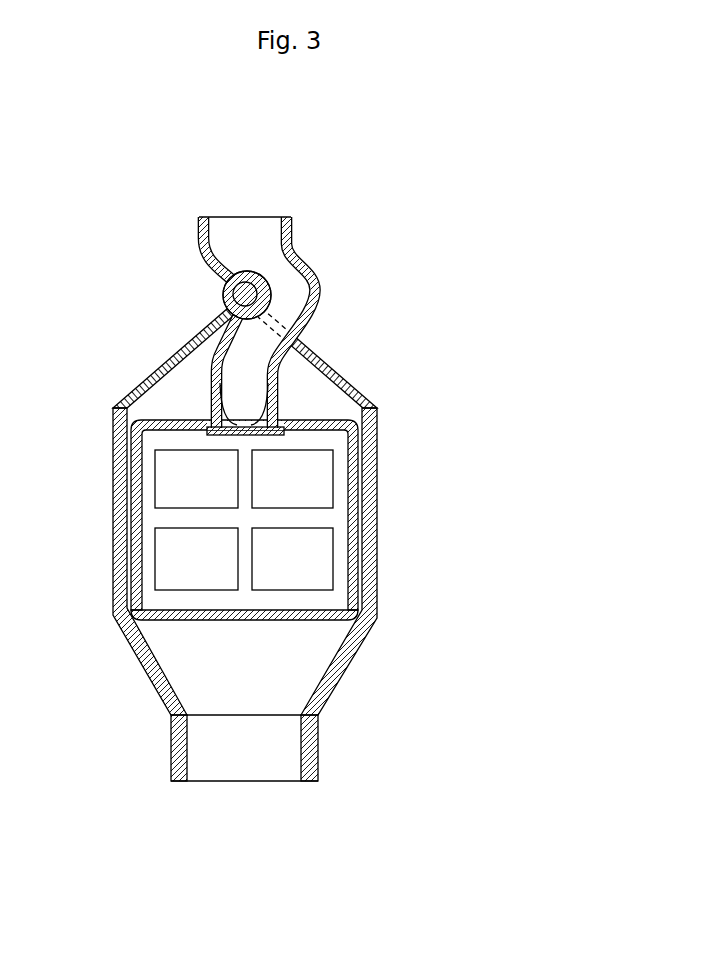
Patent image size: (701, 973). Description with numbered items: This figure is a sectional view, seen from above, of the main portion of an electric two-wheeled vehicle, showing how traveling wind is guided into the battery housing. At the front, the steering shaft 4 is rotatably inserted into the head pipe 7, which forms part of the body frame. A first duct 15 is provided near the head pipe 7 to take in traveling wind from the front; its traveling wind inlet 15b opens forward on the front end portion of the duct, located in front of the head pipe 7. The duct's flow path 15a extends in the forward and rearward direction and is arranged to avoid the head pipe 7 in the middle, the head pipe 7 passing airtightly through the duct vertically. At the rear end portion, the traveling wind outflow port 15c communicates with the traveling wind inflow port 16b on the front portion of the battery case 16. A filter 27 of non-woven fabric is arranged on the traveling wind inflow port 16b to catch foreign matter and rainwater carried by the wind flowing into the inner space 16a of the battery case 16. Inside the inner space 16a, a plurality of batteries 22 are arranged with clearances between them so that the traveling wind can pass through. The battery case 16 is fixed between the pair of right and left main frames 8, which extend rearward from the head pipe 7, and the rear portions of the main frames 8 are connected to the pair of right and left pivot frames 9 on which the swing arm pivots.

The steering shaft 4 is at (258, 285).
The head pipe 7 is at (225, 296).
The main frames 8 is at (113, 573).
The pivot frames 9 is at (318, 745).
The first duct 15 is at (303, 290).
The flow path 15a is at (295, 310).
The traveling wind inlet 15b is at (243, 217).
The traveling wind outflow port 15c is at (280, 383).
The battery case 16 is at (252, 520).
The inner space 16a is at (340, 594).
The traveling wind inflow port 16b is at (212, 382).
The batteries 22 is at (168, 560).
The filter 27 is at (207, 431).